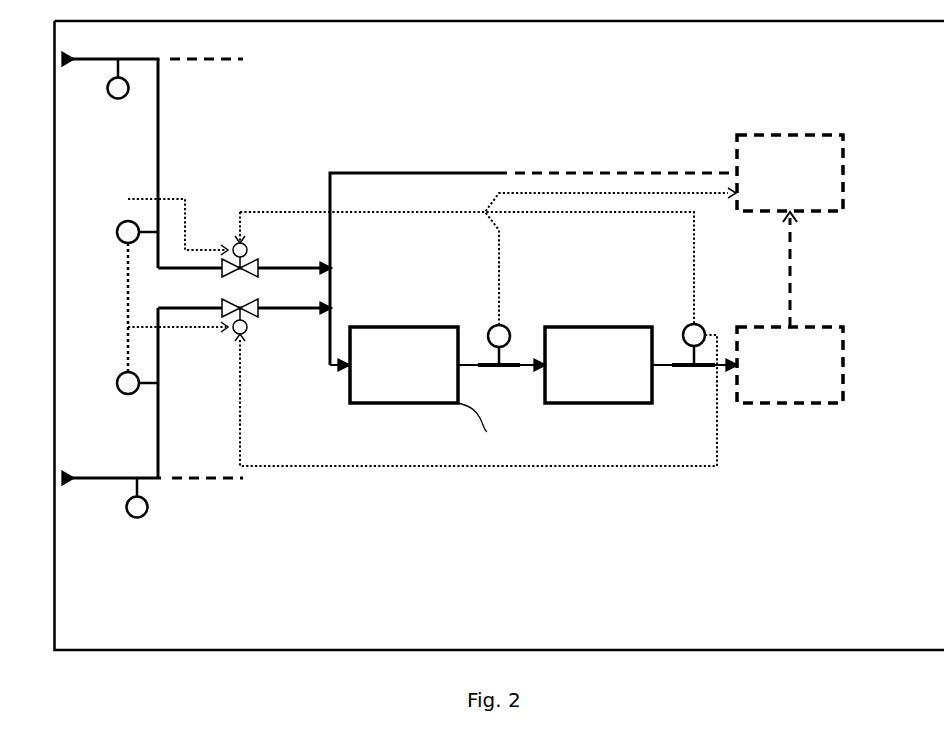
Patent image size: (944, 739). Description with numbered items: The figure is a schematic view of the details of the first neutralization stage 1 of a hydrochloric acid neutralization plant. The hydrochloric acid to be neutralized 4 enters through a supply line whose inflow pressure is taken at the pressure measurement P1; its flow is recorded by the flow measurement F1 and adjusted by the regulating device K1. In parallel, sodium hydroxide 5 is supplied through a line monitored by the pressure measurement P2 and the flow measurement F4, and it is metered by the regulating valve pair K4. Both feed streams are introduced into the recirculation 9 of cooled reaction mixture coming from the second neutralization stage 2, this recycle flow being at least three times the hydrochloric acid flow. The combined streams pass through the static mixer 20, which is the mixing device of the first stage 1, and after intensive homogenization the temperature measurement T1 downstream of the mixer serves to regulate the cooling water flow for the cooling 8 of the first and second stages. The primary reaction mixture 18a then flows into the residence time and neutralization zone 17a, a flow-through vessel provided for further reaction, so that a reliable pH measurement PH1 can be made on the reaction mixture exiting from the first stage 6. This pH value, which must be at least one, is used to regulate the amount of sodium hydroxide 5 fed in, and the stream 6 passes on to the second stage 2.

The first neutralization stage 1 is at (404, 374).
The second neutralization stage 2 is at (790, 365).
The hydrochloric acid to be neutralized 4 is at (152, 160).
The sodium hydroxide 5 is at (152, 402).
The reaction mixture exiting from the first stage 6 is at (695, 372).
The cooling of the first and second neutralization stage 8 is at (790, 231).
The recirculation of cooled reaction mixture of the second stage 9 is at (532, 272).
The residence time and neutralization zone downstream of the first stage 17a is at (598, 365).
The primary reaction mixture of the first stage 18a is at (502, 372).
The static mixer of the first stage 20 is at (479, 428).
The inflow pressure measurement for hydrochloric acid P1 is at (114, 85).
The inflow pressure measurement for sodium hydroxide P2 is at (134, 508).
The flow measurement of hydrochloric acid feed to first neutralization stage F1 is at (162, 285).
The flow measurement for sodium hydroxide feed to first neutralization stage F4 is at (128, 382).
The regulating device for hydrochloric acid feed to first neutralization stage K1 is at (245, 244).
The regulating valve pair for sodium hydroxide feed to first neutralization stage K4 is at (245, 382).
The temperature measurement after first neutralization stage for cooling water regul T1 is at (610, 276).
The pH measurement after first neutralization stage for pH regulation PH1 is at (481, 339).